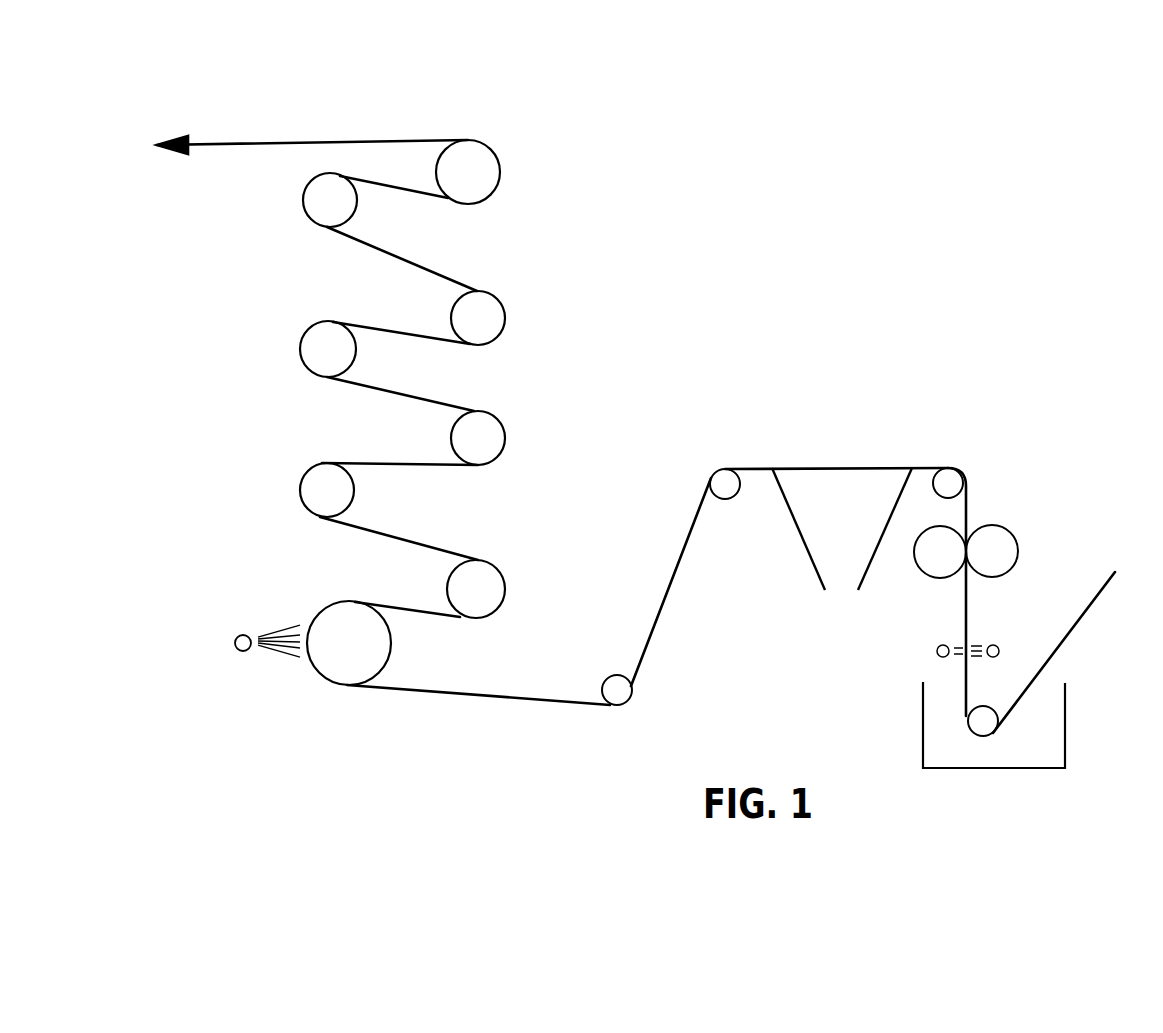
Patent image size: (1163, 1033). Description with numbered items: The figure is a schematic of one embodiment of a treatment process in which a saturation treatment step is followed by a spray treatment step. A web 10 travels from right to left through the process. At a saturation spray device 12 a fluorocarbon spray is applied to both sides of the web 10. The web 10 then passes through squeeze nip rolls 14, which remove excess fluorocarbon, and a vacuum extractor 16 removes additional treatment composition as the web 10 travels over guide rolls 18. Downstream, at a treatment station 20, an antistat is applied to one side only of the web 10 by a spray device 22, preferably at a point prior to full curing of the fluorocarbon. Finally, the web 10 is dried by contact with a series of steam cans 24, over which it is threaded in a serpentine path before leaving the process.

The web 10 is at (256, 144).
The saturation spray device 12 is at (926, 668).
The squeeze nip rolls 14 is at (1003, 545).
The vacuum extractor 16 is at (843, 586).
The guide rolls 18 is at (622, 696).
The treatment station 20 is at (232, 666).
The spray device 22 is at (238, 635).
The steam cans 24 is at (488, 178).